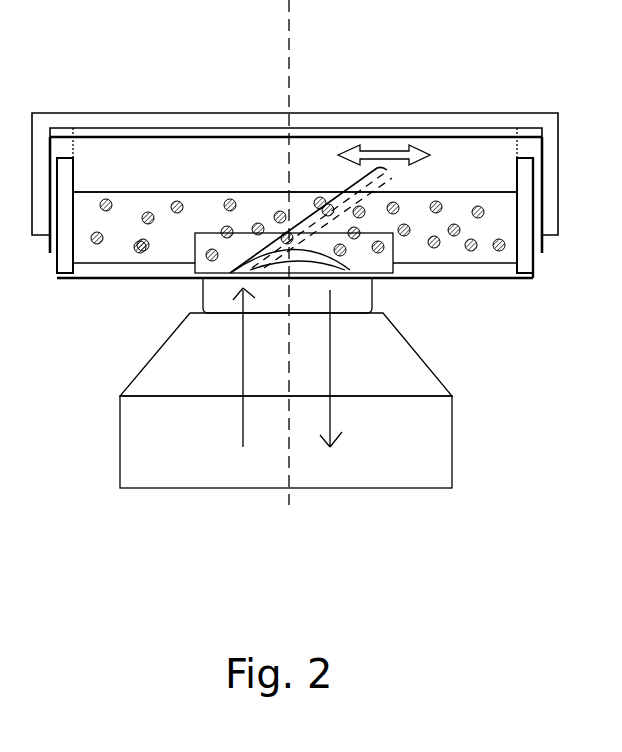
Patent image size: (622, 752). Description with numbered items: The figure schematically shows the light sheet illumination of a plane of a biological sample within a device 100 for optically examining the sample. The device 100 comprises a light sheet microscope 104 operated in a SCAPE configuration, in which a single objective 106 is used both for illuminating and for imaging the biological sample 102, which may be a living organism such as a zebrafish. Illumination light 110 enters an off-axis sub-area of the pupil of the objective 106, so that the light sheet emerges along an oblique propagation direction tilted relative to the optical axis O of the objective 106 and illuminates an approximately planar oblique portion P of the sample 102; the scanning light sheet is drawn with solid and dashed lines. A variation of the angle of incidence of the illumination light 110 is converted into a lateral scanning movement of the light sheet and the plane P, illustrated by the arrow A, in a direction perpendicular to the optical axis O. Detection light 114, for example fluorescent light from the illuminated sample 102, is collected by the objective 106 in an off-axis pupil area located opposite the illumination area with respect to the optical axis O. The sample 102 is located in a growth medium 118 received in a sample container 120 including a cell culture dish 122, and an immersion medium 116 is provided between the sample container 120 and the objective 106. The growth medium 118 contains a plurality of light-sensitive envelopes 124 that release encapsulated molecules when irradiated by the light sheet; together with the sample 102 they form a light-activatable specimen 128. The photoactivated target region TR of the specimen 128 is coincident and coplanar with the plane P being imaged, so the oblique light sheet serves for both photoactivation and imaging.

The device 100 is at (596, 29).
The biological sample 102 is at (340, 277).
The light sheet microscope 104 is at (307, 443).
The objective 106 is at (453, 452).
The illumination light 110 is at (242, 414).
The detection light 114 is at (330, 387).
The immersion medium 116 is at (200, 296).
The growth medium 118 is at (97, 253).
The sample container 120 is at (32, 133).
The cell culture dish 122 is at (528, 265).
The light-sensitive envelopes 124 is at (180, 208).
The light-activatable specimen 128 is at (135, 192).
The arrow A is at (388, 155).
The optical axis O is at (297, 17).
The oblique portion P is at (275, 175).
The photoactivated target region TR is at (320, 176).